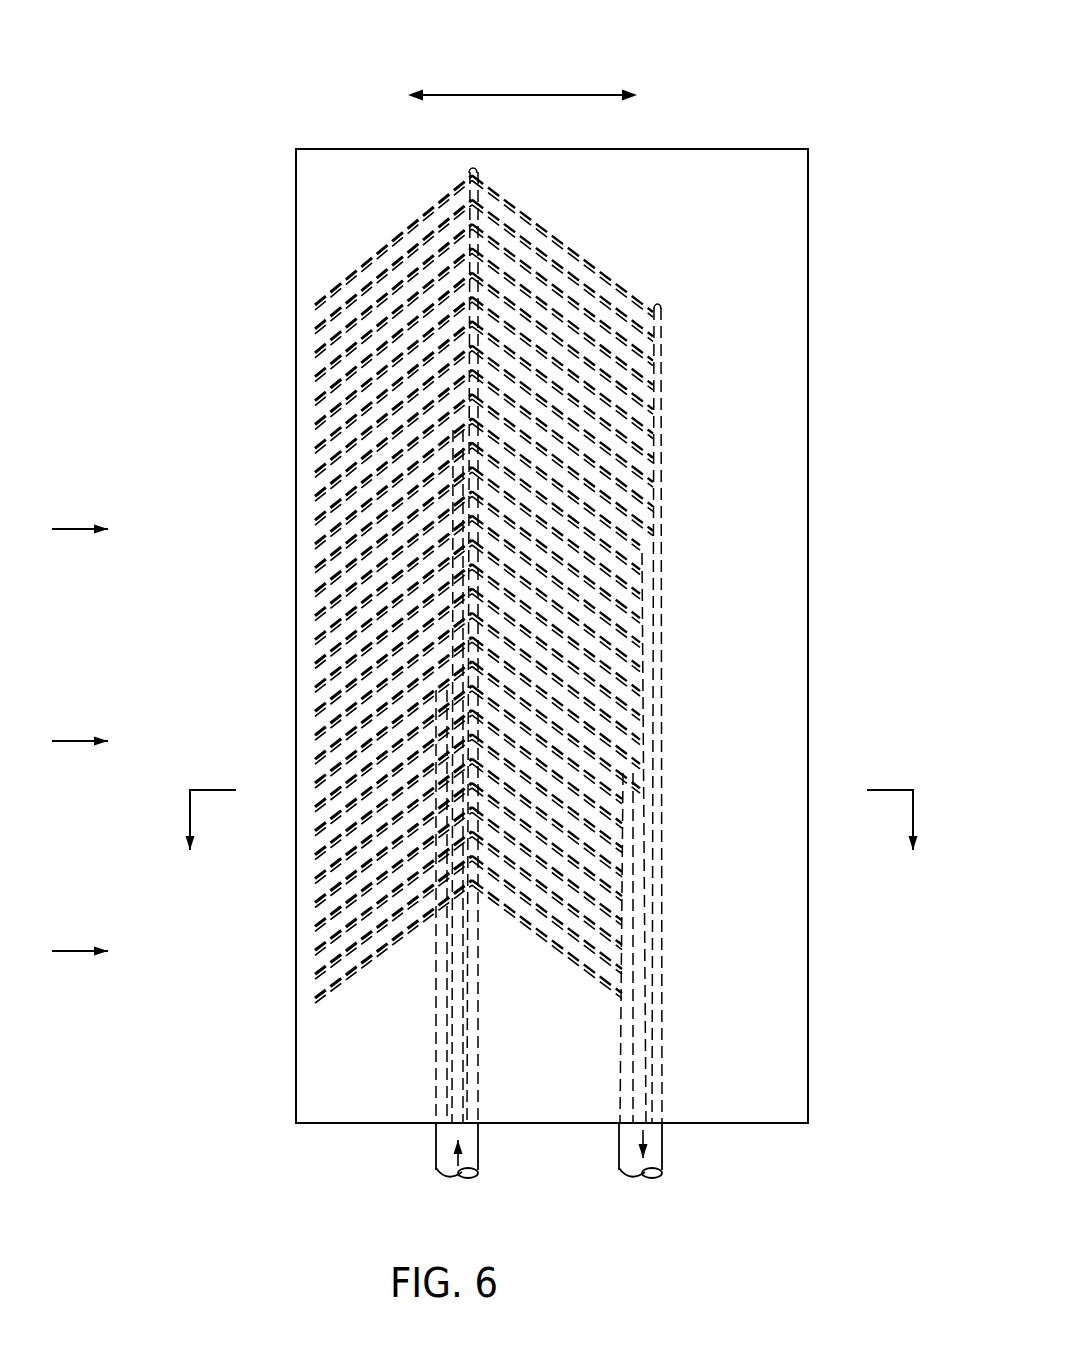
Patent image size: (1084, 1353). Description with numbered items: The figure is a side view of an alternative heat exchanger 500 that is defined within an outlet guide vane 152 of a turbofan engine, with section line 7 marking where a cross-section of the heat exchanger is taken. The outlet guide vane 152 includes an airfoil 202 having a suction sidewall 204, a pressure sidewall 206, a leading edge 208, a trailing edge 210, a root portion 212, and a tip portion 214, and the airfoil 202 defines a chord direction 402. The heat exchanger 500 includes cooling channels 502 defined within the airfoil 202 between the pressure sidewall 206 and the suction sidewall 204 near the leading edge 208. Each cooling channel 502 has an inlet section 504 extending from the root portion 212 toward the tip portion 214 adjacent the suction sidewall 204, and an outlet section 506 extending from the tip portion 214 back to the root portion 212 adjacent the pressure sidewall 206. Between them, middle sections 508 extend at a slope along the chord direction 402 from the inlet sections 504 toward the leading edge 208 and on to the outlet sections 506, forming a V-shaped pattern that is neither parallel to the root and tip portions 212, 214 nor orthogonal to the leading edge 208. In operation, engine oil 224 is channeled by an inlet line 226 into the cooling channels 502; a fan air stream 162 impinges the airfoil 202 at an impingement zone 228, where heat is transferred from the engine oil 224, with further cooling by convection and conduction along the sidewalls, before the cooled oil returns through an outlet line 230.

The heat exchanger 500 is at (856, 57).
The outlet guide vane 152 is at (828, 127).
The airfoil 202 is at (793, 342).
The suction sidewall 204 is at (780, 689).
The pressure sidewall 206 is at (321, 232).
The leading edge 208 is at (296, 552).
The trailing edge 210 is at (808, 773).
The root portion 212 is at (752, 1125).
The tip portion 214 is at (655, 149).
The engine oil 224 is at (436, 1145).
The inlet line 226 is at (436, 1170).
The impingement zone 228 is at (347, 166).
The outlet line 230 is at (662, 1175).
The chord direction 402 is at (521, 94).
The cooling channel 502 is at (600, 256).
The inlet section 504 is at (482, 1000).
The outlet section 506 is at (665, 1025).
The middle section 508 is at (380, 968).
The fan air stream 162 is at (58, 527).
The section line 7- 7 is at (552, 841).